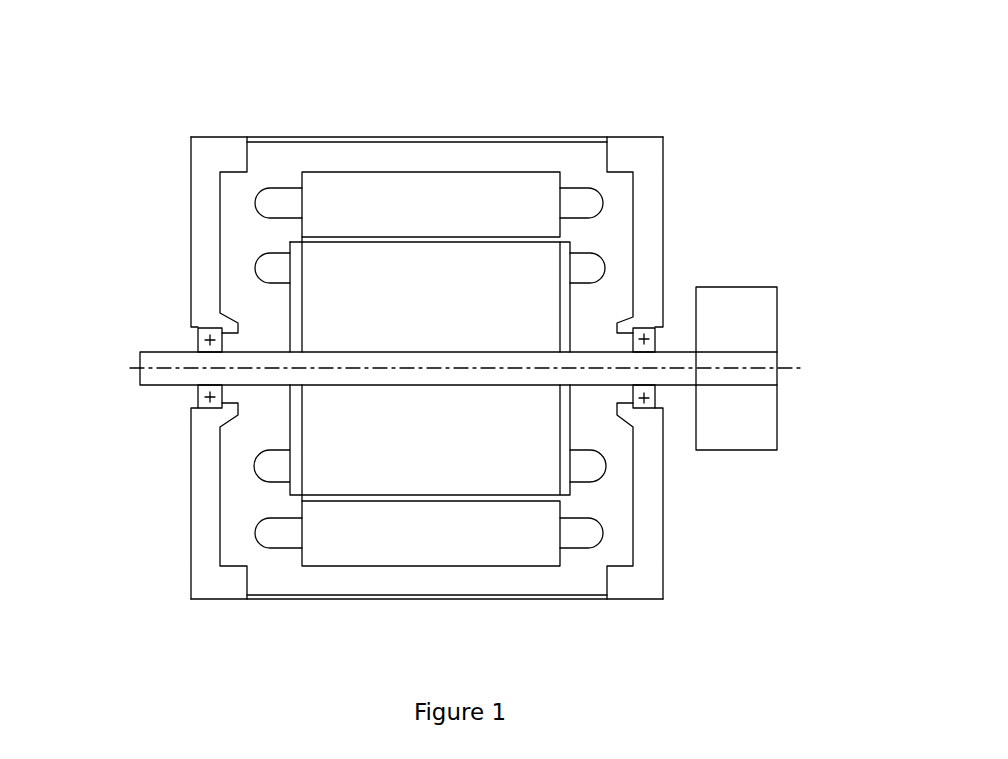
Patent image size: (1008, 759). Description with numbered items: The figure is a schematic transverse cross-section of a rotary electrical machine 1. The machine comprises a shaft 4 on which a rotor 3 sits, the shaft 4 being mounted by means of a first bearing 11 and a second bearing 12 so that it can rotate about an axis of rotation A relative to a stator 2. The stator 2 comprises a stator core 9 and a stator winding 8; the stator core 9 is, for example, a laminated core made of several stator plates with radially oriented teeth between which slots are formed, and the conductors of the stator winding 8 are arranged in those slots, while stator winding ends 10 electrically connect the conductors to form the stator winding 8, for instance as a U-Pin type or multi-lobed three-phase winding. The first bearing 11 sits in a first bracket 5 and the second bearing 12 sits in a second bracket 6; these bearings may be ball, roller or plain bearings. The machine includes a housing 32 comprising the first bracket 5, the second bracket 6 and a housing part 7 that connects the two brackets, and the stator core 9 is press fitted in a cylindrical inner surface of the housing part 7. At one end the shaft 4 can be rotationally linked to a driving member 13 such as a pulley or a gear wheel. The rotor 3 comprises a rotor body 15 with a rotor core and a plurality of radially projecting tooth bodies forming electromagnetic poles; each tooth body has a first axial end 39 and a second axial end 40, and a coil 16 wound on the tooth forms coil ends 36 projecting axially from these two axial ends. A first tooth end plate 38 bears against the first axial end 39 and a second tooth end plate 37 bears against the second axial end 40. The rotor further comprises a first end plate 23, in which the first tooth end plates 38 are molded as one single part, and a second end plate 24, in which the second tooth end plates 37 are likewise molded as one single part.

The rotary electrical machine 1 is at (135, 95).
The stator 2 is at (627, 545).
The rotor 3 is at (248, 498).
The shaft 4 is at (167, 384).
The first bracket 5 is at (197, 277).
The second bracket 6 is at (647, 162).
The housing part 7 is at (530, 163).
The stator winding 8 is at (610, 207).
The stator core 9 is at (363, 553).
The stator winding ends 10 is at (575, 537).
The first bearing 11 is at (198, 340).
The second bearing 12 is at (637, 399).
The driving member 13 is at (763, 402).
The rotor body 15 is at (320, 413).
The coil 16 is at (588, 472).
The first end plate 23 is at (563, 338).
The second end plate 24 is at (205, 408).
The housing 32 is at (180, 148).
The coil ends 36 is at (587, 265).
The second tooth end plate 37 is at (297, 248).
The first tooth end plate 38 is at (563, 312).
The first axial end 39 is at (575, 256).
The second axial end 40 is at (290, 303).
The axis of rotation A is at (803, 368).